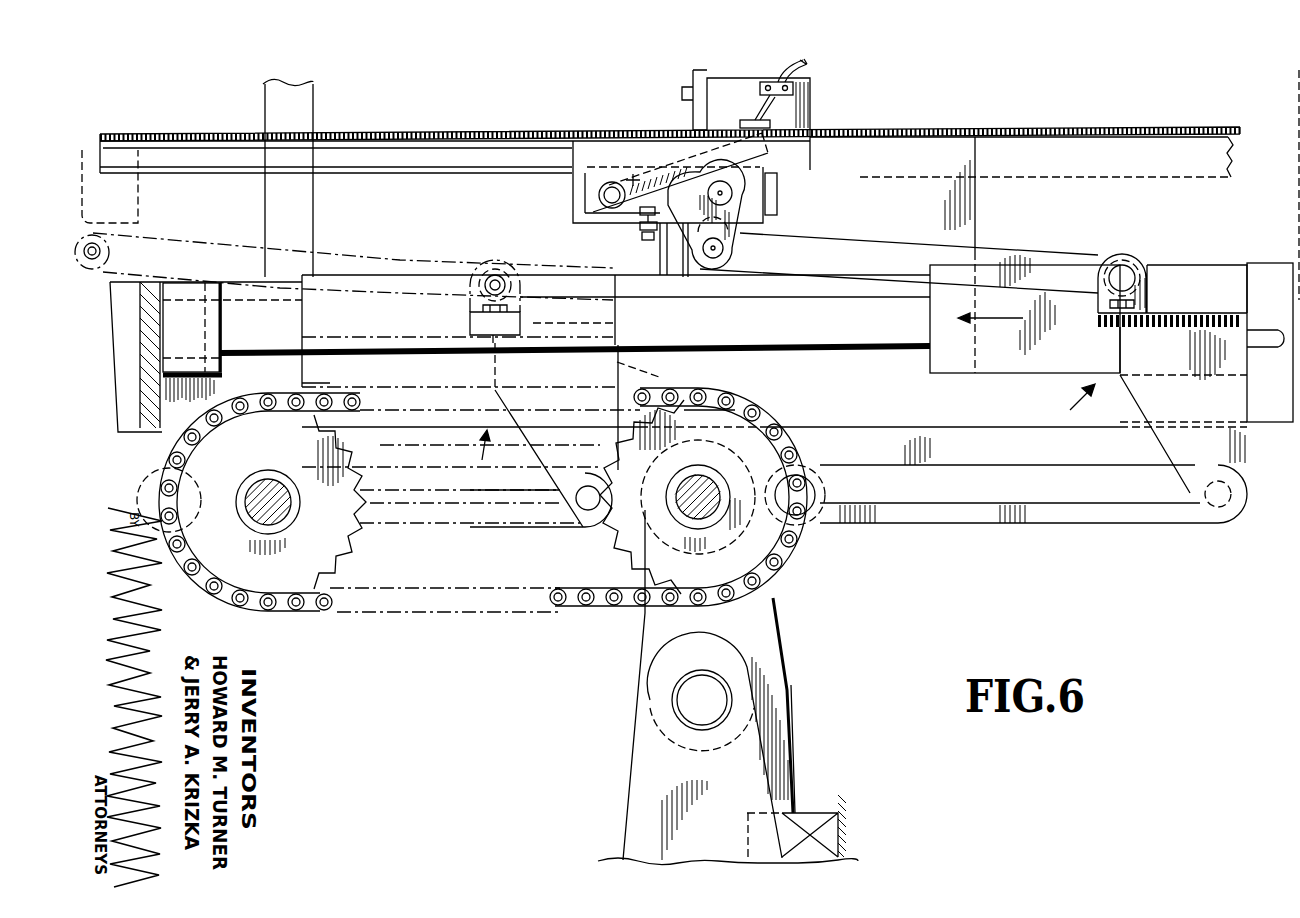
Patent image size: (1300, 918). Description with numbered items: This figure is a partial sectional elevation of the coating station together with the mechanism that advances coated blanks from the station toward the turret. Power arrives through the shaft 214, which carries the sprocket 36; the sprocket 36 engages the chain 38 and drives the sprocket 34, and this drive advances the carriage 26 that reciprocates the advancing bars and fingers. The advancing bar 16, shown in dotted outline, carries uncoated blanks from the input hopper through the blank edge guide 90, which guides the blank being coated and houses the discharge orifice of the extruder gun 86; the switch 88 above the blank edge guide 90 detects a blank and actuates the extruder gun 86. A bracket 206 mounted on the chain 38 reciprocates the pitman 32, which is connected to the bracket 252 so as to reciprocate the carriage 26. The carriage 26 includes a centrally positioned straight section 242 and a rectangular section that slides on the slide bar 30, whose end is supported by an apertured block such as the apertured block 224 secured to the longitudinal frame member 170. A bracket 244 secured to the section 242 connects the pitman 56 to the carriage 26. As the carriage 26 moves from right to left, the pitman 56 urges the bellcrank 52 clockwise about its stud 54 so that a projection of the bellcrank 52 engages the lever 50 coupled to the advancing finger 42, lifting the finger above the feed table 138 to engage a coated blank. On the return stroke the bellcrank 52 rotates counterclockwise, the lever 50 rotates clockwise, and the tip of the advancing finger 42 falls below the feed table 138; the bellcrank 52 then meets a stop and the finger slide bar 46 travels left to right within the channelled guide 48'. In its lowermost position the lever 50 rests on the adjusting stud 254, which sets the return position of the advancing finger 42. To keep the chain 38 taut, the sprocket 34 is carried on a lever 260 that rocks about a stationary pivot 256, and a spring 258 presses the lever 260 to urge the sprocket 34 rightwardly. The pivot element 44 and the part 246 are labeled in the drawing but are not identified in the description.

The feed table 138 is at (193, 135).
The channelled guide 48' is at (455, 178).
The advancing bar 16 is at (1155, 175).
The extruder gun 86 is at (684, 118).
The switch 88 is at (800, 93).
The blank edge guide 90 is at (752, 117).
The advancing finger 42 is at (667, 140).
The lever 50 is at (630, 180).
The finger slide bar 46 is at (571, 162).
The pivot pin 44 is at (598, 198).
The stud 54 is at (732, 189).
The bellcrank 52 is at (732, 225).
The adjusting stud 254 is at (638, 240).
The bracket 244 is at (492, 270).
The pitman 56 is at (353, 264).
The slide bar 30 is at (1287, 338).
The slide block 246 is at (1028, 373).
The straight section 242 is at (1152, 324).
The carriage 26 is at (783, 427).
The longitudinal frame member 170 is at (936, 423).
The bracket 252 is at (1233, 457).
The pitman 32 is at (1038, 523).
The bracket 206 is at (158, 485).
The chain 38 is at (790, 573).
The apertured block 224 is at (222, 368).
The shaft 214 is at (298, 528).
The sprocket 34 is at (596, 545).
The sprocket 36 is at (345, 568).
The stationary pivot 256 is at (678, 698).
The lever 260 is at (793, 687).
The spring 258 is at (828, 808).